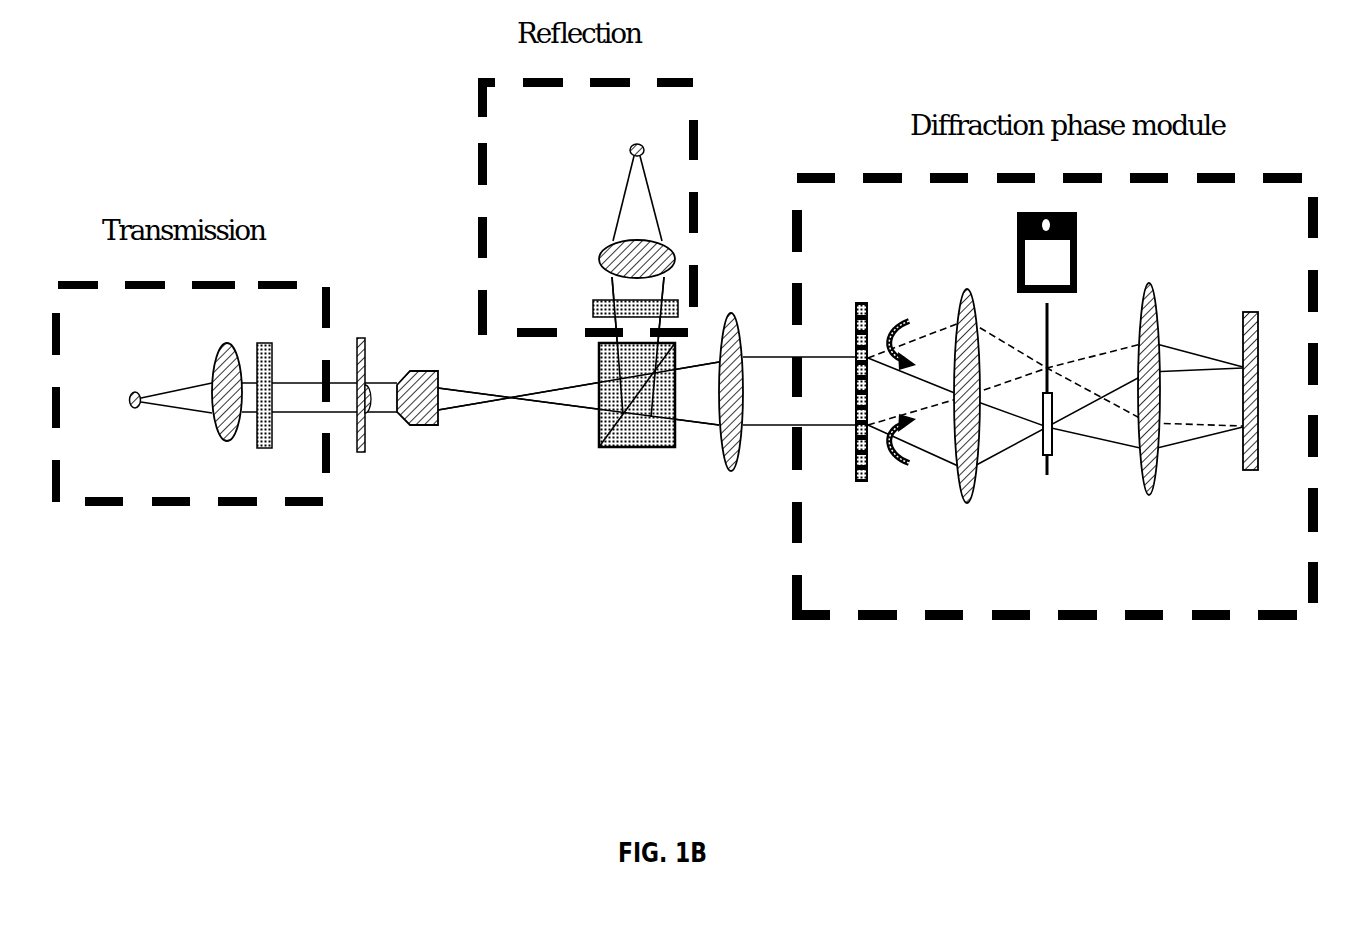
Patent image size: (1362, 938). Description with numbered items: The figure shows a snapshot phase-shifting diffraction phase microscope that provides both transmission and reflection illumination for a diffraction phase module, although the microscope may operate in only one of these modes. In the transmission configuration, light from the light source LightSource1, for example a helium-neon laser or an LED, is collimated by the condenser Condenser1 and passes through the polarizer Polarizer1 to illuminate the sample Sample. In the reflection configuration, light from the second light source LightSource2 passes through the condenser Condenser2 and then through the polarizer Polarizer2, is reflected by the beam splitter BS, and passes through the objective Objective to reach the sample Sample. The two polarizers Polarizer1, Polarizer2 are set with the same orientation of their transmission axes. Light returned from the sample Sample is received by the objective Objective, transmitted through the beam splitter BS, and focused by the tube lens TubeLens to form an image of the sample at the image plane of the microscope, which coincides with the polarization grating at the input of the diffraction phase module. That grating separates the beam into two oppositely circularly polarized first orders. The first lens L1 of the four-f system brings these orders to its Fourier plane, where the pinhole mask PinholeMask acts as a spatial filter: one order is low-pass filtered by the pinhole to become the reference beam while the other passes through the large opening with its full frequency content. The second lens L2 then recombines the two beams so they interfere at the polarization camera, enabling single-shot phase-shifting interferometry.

The light source LightSource1 is at (138, 421).
The condenser Condenser1 is at (229, 413).
The polarizer Polarizer1 is at (272, 376).
The sample Sample is at (372, 420).
The microscope objective Objective is at (429, 412).
The light source LightSource2 is at (621, 130).
The condenser Condenser2 is at (583, 259).
The polarizer Polarizer2 is at (590, 307).
The beam splitter BS is at (578, 384).
The tube lens TubeLens is at (728, 439).
The first lens L1 is at (962, 418).
The spatial filter PinholeMask is at (1054, 389).
The second lens L2 is at (1145, 415).